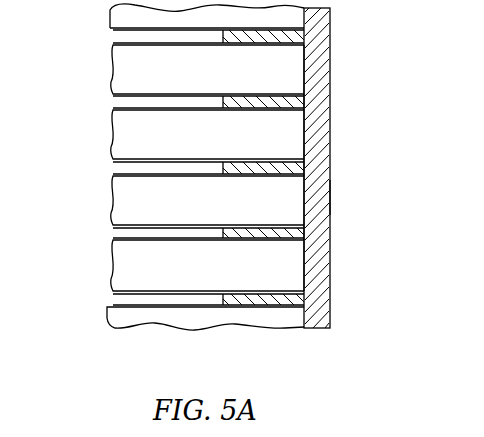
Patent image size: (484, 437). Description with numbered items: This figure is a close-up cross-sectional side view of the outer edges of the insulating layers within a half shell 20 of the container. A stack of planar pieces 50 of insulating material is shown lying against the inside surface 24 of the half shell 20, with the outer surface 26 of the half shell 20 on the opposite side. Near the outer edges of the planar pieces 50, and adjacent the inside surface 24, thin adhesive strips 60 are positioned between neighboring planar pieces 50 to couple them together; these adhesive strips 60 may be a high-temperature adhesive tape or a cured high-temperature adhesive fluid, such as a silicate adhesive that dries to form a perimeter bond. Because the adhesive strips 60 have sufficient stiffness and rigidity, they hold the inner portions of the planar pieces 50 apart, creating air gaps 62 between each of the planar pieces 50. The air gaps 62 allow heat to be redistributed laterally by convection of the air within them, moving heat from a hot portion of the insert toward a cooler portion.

The half shell 20 is at (315, 115).
The inside surface 24 is at (300, 195).
The outer surface 26 is at (336, 198).
The planar pieces 50 is at (132, 70).
The adhesive strips 60 is at (257, 40).
The air gaps 62 is at (133, 36).